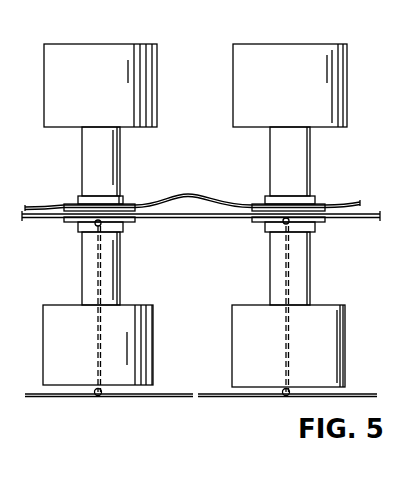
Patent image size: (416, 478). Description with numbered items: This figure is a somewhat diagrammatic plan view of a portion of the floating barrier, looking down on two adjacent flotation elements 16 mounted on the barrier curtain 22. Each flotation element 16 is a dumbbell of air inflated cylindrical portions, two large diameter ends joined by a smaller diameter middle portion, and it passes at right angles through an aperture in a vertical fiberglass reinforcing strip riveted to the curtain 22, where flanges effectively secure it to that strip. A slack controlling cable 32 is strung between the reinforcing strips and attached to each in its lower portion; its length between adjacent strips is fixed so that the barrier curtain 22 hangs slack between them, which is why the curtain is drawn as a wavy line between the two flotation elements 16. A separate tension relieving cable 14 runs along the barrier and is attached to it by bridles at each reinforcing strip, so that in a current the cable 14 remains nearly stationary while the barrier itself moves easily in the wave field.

The tension relieving cable 14 is at (228, 398).
The flotation element 16 is at (352, 337).
The barrier curtain 22 is at (212, 196).
The slack controlling cable 32 is at (183, 219).